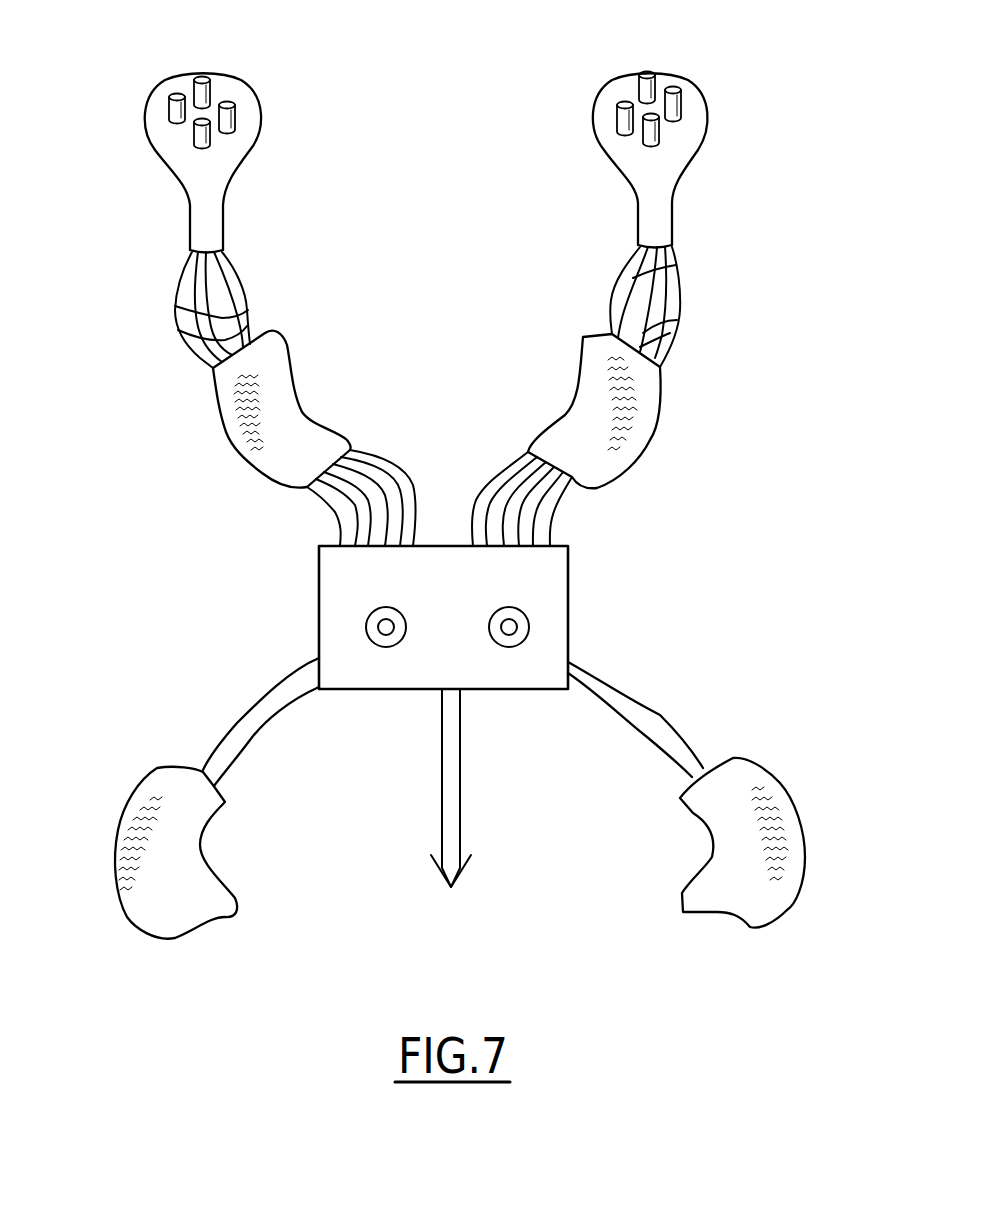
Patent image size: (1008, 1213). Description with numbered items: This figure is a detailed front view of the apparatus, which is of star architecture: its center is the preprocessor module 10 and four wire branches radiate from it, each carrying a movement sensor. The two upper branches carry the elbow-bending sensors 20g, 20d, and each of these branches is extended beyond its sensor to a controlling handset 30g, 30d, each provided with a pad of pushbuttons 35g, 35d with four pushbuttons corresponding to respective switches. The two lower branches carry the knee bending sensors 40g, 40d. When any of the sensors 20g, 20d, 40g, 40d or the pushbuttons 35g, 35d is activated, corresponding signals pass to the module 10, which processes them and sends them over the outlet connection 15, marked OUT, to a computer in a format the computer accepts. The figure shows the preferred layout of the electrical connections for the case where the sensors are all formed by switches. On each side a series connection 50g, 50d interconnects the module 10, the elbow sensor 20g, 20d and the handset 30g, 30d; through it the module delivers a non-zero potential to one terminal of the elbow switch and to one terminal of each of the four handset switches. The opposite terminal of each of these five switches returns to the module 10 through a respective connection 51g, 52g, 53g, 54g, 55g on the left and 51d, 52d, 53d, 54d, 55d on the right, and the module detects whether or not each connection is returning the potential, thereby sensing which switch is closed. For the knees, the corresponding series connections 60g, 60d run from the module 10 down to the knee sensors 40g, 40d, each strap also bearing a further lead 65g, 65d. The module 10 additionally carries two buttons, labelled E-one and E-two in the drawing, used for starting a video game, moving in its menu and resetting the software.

The preprocessor module 10 is at (550, 598).
The outlet connection 15 is at (450, 785).
The elbow-bending sensor 20g is at (224, 402).
The elbow-bending sensor 20d is at (640, 410).
The controlling handset 30g is at (215, 200).
The controlling handset 30d is at (655, 183).
The pad of pushbuttons 35g is at (203, 120).
The pad of pushbuttons 35d is at (660, 128).
The bending sensor 40g is at (118, 898).
The bending sensor 40d is at (793, 880).
The series connection 50g is at (243, 327).
The series connection 50d is at (654, 379).
The connection 51g is at (202, 357).
The connection 51d is at (670, 322).
The connection 52g is at (185, 320).
The connection 52d is at (673, 348).
The connection 53g is at (176, 307).
The connection 53d is at (678, 263).
The connection 54g is at (178, 284).
The connection 54d is at (610, 295).
The connection 55g is at (323, 517).
The connection 55d is at (508, 453).
The series connection 60g is at (240, 723).
The series connection 60d is at (671, 743).
The left strap cable 65g is at (222, 743).
The right strap cable 65d is at (652, 740).